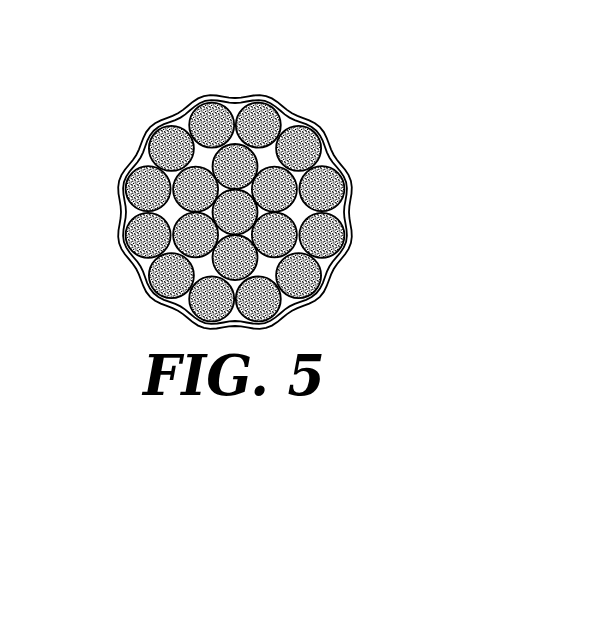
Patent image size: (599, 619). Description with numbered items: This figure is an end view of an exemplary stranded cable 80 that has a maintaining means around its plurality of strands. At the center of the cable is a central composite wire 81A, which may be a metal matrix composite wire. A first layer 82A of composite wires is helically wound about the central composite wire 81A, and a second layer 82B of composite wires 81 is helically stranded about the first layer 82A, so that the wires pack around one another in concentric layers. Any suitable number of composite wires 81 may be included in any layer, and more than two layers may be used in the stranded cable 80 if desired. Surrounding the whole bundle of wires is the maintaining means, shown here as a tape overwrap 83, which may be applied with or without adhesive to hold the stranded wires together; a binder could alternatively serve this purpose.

The stranded cable 80 is at (376, 55).
The composite wires 81 is at (297, 117).
The central composite wire 81A is at (223, 207).
The first layer 82A is at (283, 245).
The second layer 82B is at (340, 201).
The tape overwrap 83 is at (182, 120).